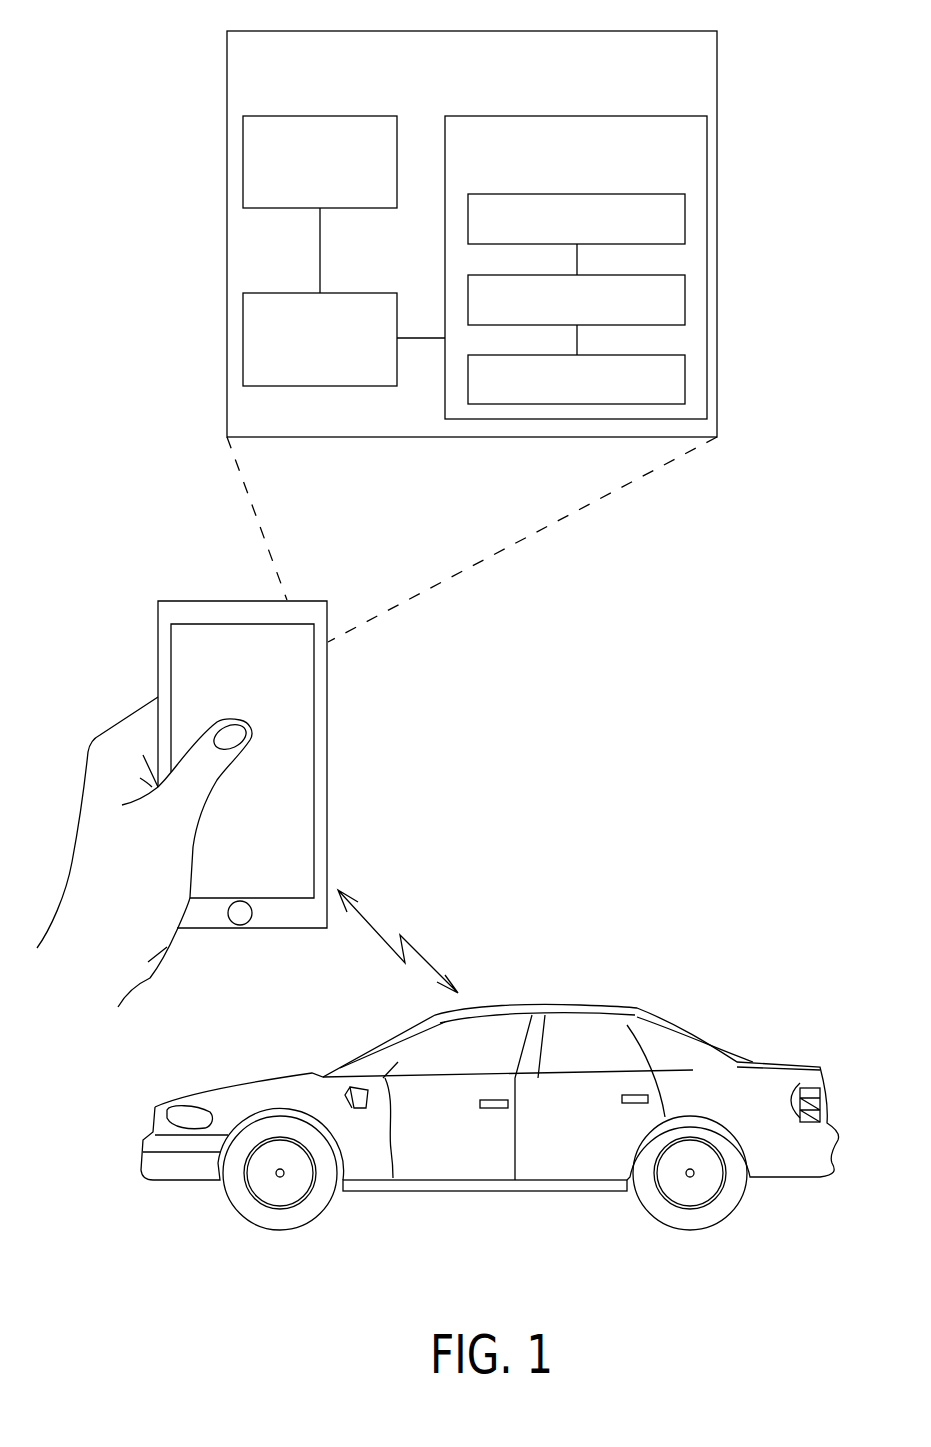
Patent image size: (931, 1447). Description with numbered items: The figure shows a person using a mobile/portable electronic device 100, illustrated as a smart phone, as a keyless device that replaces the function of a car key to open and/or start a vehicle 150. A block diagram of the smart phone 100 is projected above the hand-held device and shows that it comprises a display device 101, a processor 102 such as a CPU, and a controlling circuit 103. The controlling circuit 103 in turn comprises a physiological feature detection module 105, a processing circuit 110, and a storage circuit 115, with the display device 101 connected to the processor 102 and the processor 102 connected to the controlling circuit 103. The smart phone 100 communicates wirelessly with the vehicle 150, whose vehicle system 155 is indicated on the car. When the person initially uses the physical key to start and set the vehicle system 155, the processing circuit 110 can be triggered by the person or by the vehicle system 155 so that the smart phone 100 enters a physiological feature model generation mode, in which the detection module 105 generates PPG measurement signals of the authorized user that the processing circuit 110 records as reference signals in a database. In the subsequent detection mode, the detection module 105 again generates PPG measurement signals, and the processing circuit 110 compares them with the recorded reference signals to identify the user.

The mobile/portable electronic device 100 is at (697, 31).
The display device/panel 101 is at (243, 163).
The processor 102 is at (243, 340).
The controlling circuit 103 is at (693, 116).
The physiological feature detection module/circuit 105 is at (685, 219).
The processing circuit 110 is at (685, 299).
The storage circuit 115 is at (685, 379).
The vehicle 150 is at (580, 1005).
The vehicle system 155 is at (393, 1178).